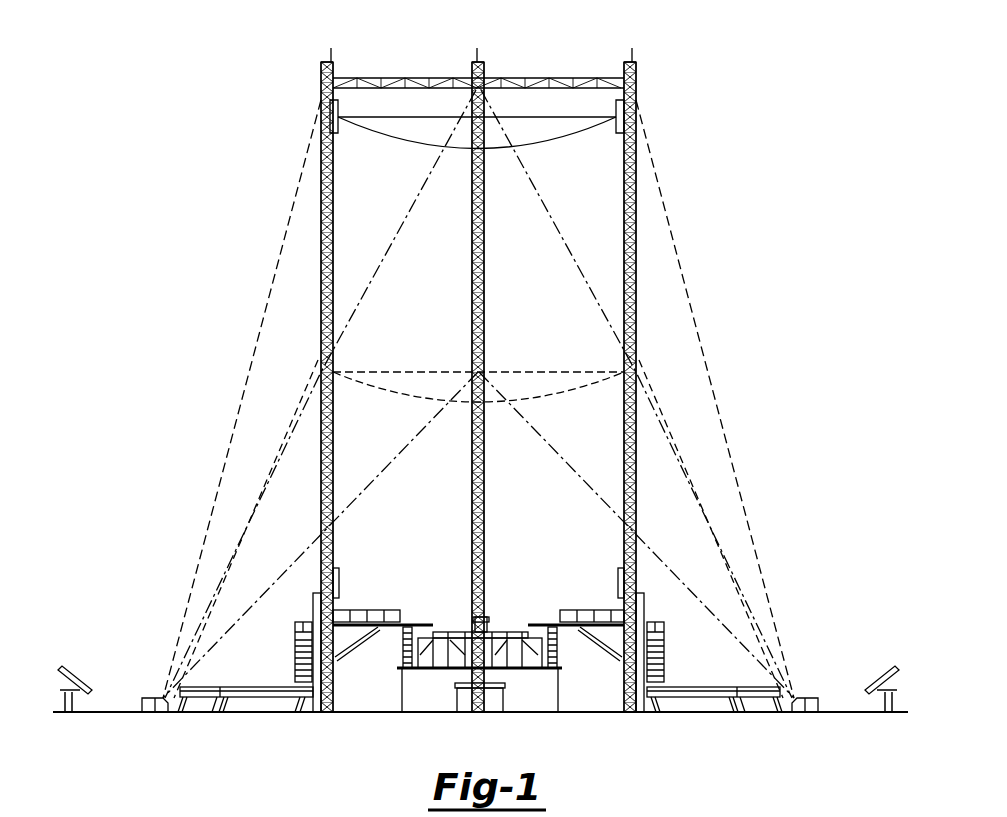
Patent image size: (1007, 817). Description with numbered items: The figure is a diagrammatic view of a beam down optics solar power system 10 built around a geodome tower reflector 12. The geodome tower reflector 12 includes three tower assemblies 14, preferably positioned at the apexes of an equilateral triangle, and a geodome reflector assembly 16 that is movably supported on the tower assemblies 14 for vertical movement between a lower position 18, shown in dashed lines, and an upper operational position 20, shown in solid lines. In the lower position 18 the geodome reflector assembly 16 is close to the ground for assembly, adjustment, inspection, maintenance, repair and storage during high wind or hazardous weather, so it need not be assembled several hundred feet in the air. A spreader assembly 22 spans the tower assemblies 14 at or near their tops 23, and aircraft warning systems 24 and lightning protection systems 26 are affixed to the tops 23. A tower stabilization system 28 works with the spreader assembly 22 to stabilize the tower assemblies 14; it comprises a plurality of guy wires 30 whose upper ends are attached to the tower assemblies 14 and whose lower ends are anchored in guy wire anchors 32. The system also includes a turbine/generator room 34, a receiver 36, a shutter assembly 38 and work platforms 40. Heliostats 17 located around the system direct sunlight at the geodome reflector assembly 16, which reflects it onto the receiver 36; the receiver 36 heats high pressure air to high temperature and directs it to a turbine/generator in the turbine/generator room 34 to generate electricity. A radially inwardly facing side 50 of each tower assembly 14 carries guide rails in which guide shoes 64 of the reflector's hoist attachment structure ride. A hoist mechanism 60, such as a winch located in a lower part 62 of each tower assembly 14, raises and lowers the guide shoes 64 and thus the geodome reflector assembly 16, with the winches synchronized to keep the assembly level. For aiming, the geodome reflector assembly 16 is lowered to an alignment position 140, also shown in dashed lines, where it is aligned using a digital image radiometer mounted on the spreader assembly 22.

The beam down optics solar power system 10 is at (674, 741).
The geodome tower reflector 12 is at (477, 356).
The tower assemblies 14 is at (321, 328).
The geodome reflector assembly 16 is at (578, 134).
The heliostats 17 is at (84, 680).
The lower position 18 is at (497, 600).
The upper operational position 20 is at (580, 118).
The spreader assembly 22 is at (575, 80).
The tops of tower assemblies 23 is at (330, 52).
The aircraft warning systems 24 is at (320, 60).
The lightning protection systems 26 is at (471, 56).
The tower stabilization system 28 is at (832, 503).
The guy wires 30 is at (260, 495).
The guy wire anchors 32 is at (149, 697).
The turbine/generator room 34 is at (520, 700).
The receiver 36 is at (600, 610).
The shutter assembly 38 is at (543, 610).
The work platforms 40 is at (356, 610).
The radially inwardly facing side 50 is at (334, 158).
The hoist mechanism 60 is at (336, 656).
The lower part of tower assembly 62 is at (344, 682).
The guide shoes 64 is at (319, 136).
The alignment position 140 is at (576, 393).